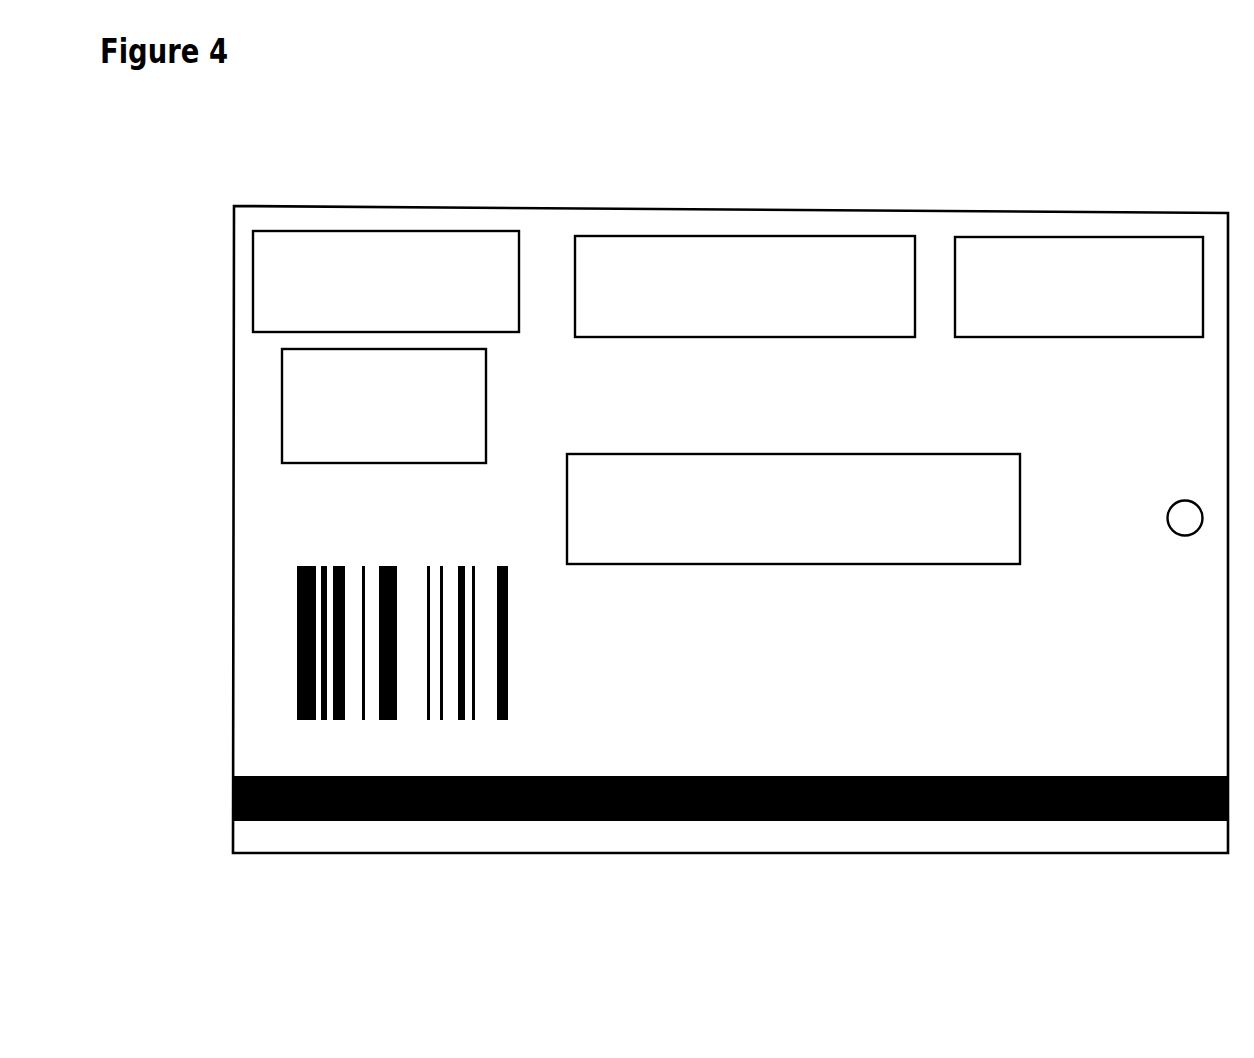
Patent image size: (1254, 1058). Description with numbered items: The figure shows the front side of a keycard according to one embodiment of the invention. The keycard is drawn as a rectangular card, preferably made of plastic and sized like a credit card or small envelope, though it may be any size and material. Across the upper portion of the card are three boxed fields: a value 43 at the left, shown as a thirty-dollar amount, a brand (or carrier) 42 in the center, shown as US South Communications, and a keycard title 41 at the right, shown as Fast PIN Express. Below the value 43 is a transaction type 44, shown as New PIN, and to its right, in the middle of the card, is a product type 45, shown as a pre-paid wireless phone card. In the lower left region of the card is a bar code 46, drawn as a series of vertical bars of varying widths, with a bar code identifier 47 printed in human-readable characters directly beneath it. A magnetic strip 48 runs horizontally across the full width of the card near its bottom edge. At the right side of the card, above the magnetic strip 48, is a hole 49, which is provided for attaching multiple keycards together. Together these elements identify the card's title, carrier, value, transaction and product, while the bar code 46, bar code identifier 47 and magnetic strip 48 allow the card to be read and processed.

The keycard title 41 is at (1070, 237).
The brand (or carrier) 42 is at (737, 236).
The value 43 is at (253, 264).
The transaction type 44 is at (282, 399).
The product type 45 is at (567, 515).
The bar code 46 is at (297, 657).
The bar code identifier 47 is at (305, 735).
The magnetic strip 48 is at (233, 797).
The hole 49 is at (1175, 533).